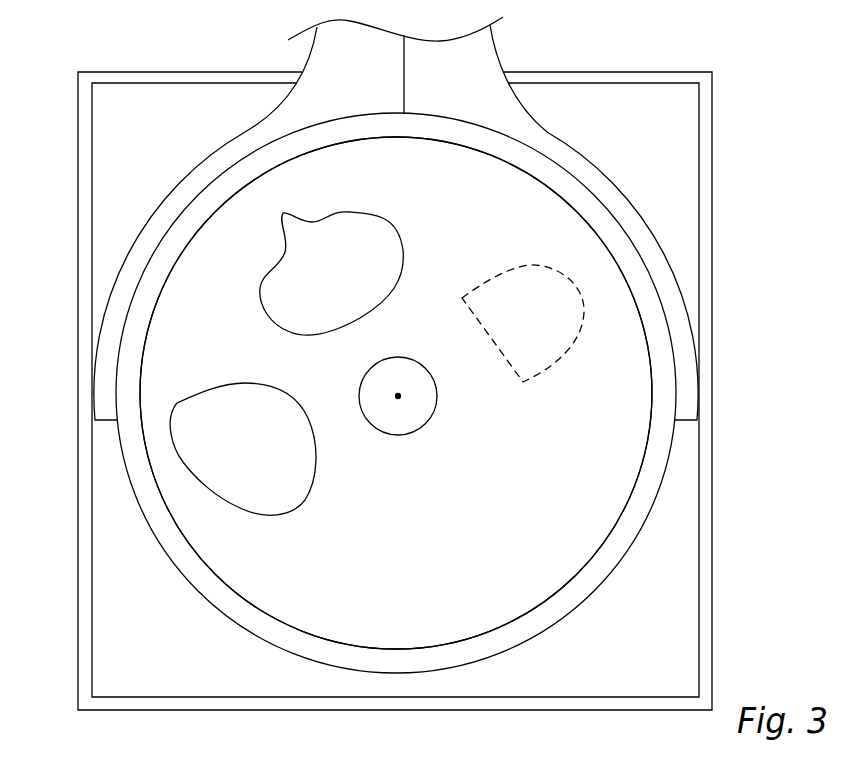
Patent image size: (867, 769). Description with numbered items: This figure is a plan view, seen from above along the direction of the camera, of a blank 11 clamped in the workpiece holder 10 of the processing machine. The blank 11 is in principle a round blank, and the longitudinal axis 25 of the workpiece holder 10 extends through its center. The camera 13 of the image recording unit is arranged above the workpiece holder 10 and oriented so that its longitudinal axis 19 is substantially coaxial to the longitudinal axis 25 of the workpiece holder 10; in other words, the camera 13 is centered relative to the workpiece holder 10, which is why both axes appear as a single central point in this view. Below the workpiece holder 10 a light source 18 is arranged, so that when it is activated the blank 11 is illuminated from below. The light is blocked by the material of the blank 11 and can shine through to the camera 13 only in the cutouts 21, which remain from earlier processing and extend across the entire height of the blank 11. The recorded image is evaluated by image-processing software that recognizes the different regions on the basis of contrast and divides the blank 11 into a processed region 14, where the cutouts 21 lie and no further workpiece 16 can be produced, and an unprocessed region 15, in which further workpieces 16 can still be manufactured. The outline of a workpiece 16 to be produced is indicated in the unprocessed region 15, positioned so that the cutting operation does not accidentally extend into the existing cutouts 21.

The workpiece holder 10 is at (687, 310).
The blank 11 is at (635, 303).
The camera 13 is at (422, 427).
The processed region 14 is at (348, 280).
The unprocessed region 15 is at (425, 535).
The workpiece 16 is at (562, 276).
The light source 18 is at (132, 83).
The longitudinal axis 19 is at (398, 396).
The cutouts 21 is at (213, 370).
The longitudinal axis 25 is at (611, 429).